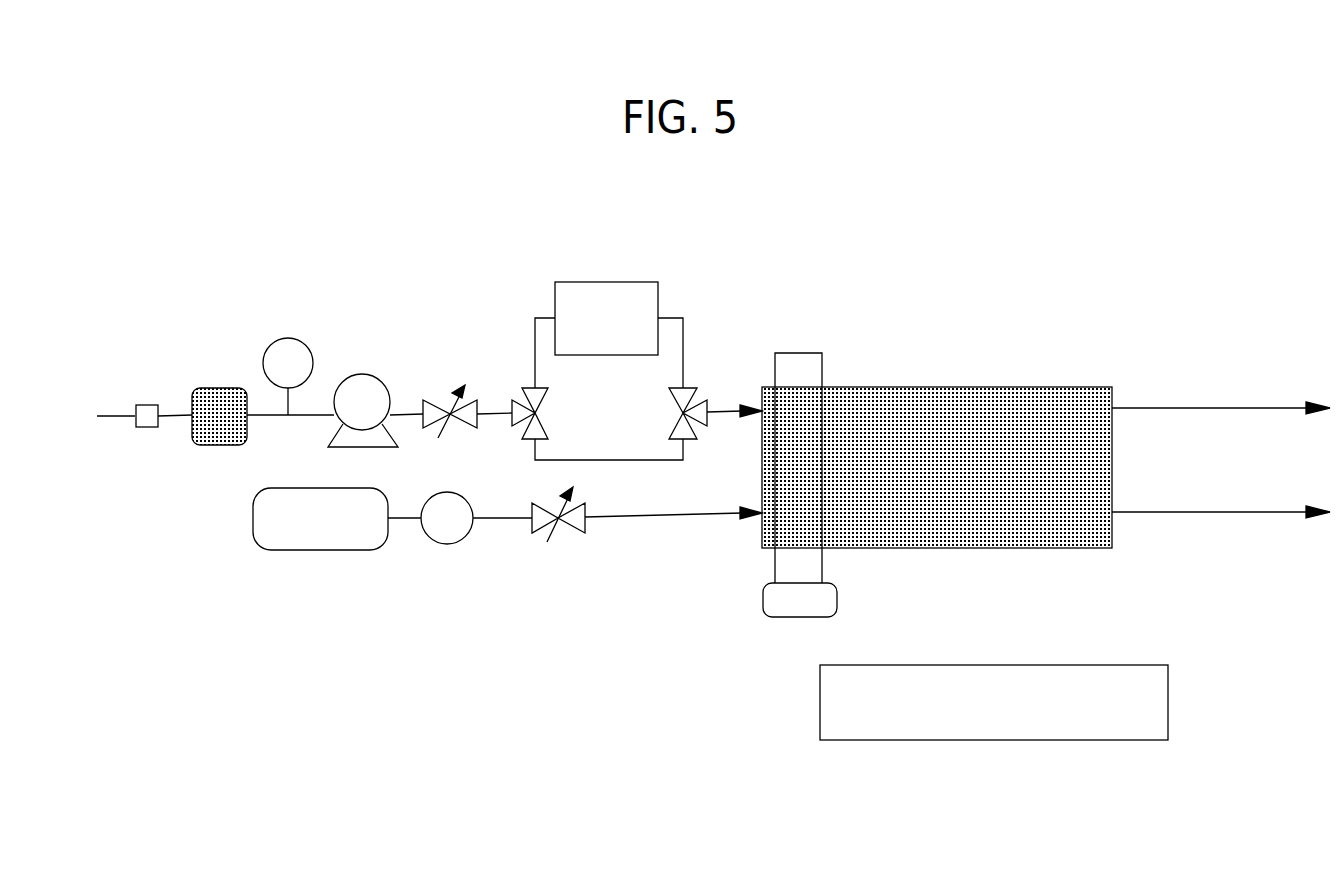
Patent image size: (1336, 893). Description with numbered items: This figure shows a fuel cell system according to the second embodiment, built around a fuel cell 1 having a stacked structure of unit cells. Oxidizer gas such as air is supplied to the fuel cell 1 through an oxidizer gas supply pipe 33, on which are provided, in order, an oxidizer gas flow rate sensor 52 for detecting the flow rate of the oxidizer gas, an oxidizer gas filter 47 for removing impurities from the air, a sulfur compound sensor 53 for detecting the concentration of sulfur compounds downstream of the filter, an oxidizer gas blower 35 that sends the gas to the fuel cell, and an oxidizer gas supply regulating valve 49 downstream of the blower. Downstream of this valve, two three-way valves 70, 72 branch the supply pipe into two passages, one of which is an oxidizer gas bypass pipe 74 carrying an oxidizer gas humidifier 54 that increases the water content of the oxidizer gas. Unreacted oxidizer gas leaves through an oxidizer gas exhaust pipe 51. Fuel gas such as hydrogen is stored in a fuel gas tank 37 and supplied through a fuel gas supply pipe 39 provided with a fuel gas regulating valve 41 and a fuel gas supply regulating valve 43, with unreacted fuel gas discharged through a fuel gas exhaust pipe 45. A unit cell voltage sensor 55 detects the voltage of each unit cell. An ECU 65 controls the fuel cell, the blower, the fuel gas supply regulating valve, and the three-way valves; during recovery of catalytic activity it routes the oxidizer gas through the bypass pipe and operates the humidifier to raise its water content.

The fuel cell 1 is at (963, 387).
The oxidizer gas supply pipe 33 is at (112, 418).
The oxidizer gas blower 35 is at (362, 374).
The fuel gas tank 37 is at (320, 552).
The fuel gas supply pipe 39 is at (673, 491).
The fuel gas regulating valve 41 is at (447, 546).
The fuel gas supply regulating valve 43 is at (563, 533).
The fuel gas exhaust pipe 45 is at (1206, 515).
The oxidizer gas filter 47 is at (203, 392).
The oxidizer gas supply regulating valve 49 is at (447, 400).
The oxidizer gas exhaust pipe 51 is at (1196, 407).
The oxidizer gas flow rate sensor 52 is at (147, 428).
The sulfur compound sensor 53 is at (269, 348).
The oxidizer gas humidifier 54 is at (605, 282).
The unit cell voltage sensor 55 is at (783, 618).
The ECU 65 is at (873, 665).
The three-way valve 70 is at (533, 378).
The three-way valve 72 is at (669, 413).
The oxidizer gas bypass pipe 74 is at (683, 335).